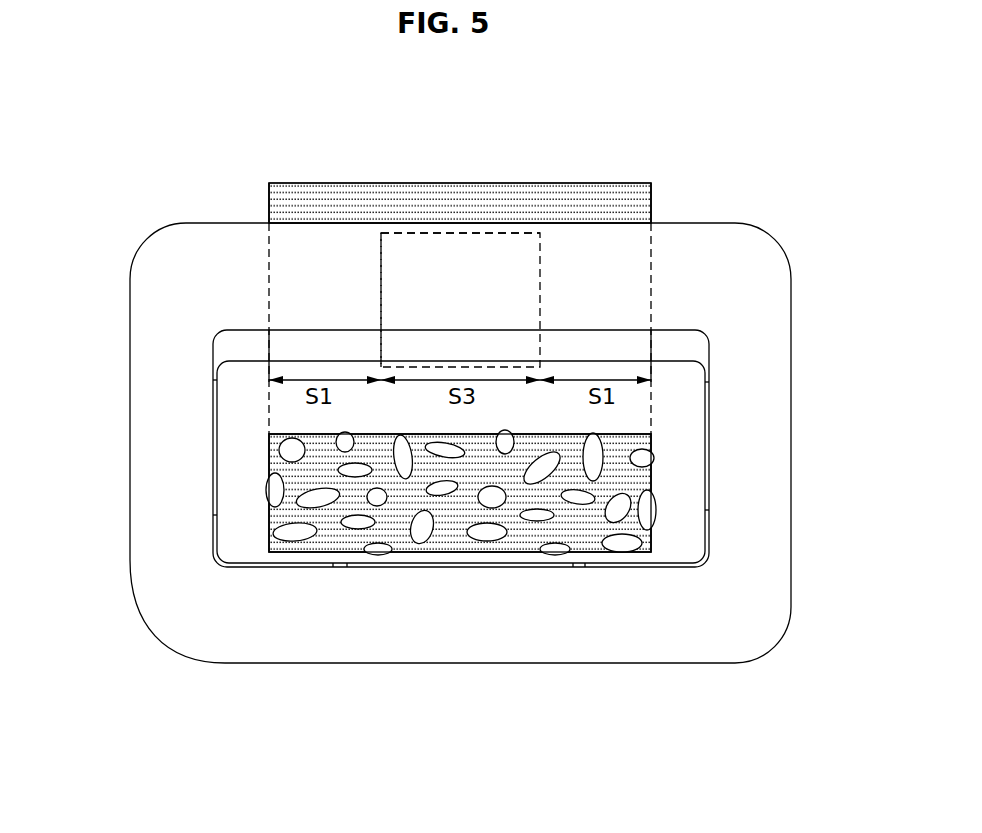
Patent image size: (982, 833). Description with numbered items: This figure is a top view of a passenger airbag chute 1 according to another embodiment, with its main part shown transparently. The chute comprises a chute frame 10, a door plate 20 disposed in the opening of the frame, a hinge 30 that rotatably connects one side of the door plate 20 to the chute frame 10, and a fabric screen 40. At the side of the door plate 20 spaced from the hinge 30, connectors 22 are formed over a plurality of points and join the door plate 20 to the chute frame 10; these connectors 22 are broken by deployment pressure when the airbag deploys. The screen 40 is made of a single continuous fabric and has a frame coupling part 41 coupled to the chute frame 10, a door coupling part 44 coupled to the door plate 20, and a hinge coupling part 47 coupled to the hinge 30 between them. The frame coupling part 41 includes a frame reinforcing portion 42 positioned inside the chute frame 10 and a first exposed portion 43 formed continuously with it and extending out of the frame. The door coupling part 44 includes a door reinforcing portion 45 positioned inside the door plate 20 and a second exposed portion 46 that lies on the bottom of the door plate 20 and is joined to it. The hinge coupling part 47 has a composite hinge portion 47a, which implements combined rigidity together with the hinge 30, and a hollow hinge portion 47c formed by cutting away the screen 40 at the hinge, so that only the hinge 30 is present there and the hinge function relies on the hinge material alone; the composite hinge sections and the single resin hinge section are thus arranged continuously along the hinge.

The passenger airbag chute 1 is at (727, 70).
The chute frame 10 is at (760, 397).
The door plate 20 is at (677, 468).
The connectors 22 is at (213, 378).
The hinge 30 is at (487, 350).
The screen 40 is at (267, 200).
The frame coupling part 41 is at (430, 92).
The frame reinforcing portion 42 is at (337, 260).
The first exposed portion 43 is at (440, 207).
The door coupling part 44 is at (491, 748).
The door reinforcing portion 45 is at (508, 417).
The second exposed portion 46 is at (540, 495).
The hinge coupling part 47 is at (48, 262).
The composite hinge portion 47a is at (290, 347).
The hollow hinge portion 47c is at (413, 345).